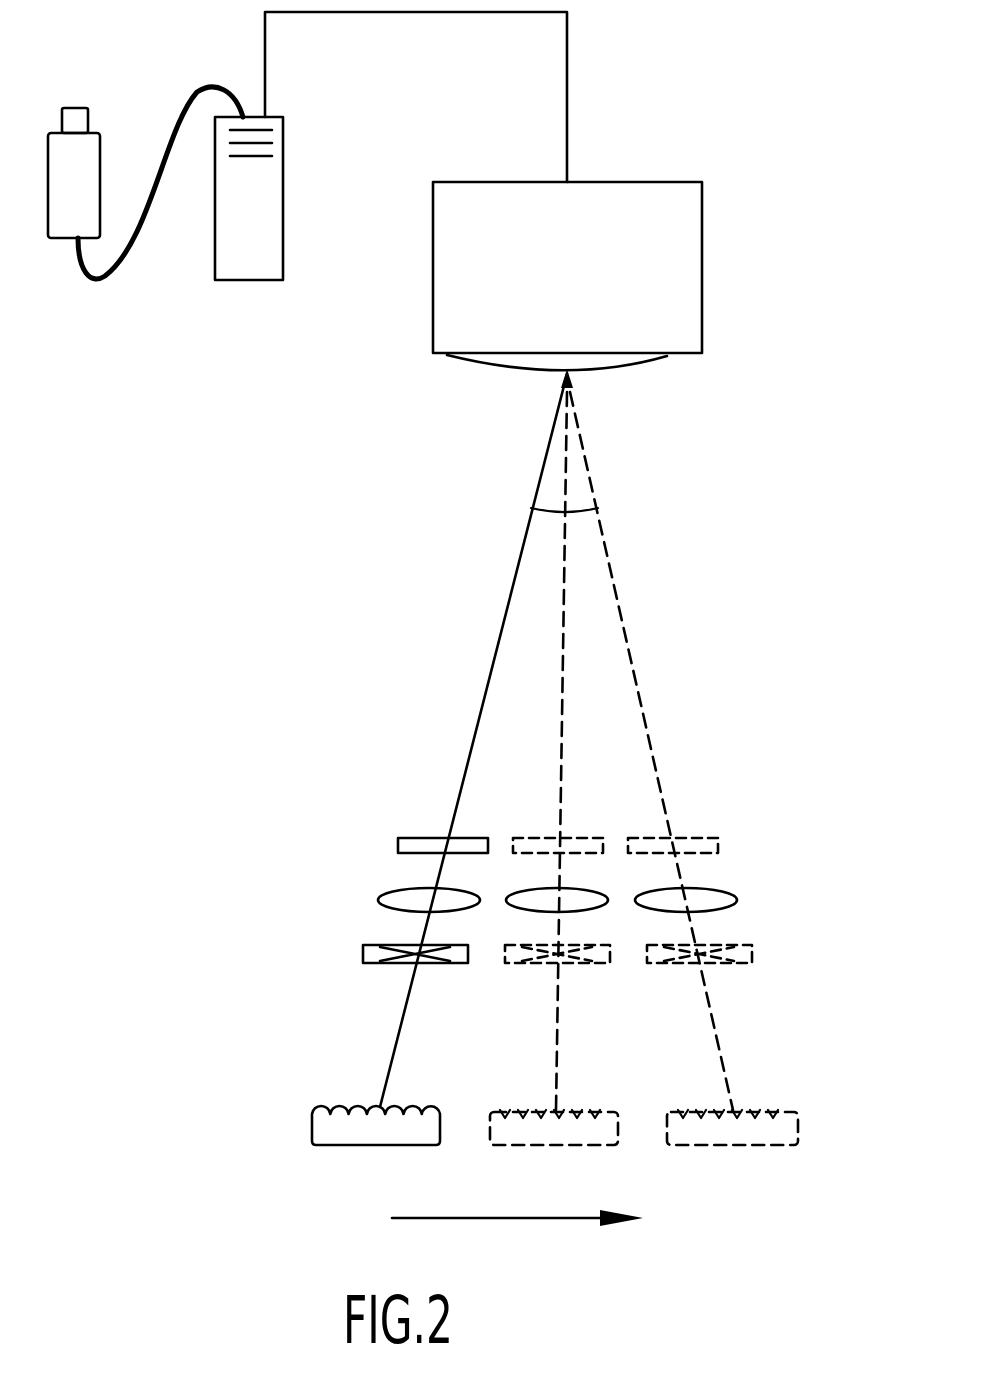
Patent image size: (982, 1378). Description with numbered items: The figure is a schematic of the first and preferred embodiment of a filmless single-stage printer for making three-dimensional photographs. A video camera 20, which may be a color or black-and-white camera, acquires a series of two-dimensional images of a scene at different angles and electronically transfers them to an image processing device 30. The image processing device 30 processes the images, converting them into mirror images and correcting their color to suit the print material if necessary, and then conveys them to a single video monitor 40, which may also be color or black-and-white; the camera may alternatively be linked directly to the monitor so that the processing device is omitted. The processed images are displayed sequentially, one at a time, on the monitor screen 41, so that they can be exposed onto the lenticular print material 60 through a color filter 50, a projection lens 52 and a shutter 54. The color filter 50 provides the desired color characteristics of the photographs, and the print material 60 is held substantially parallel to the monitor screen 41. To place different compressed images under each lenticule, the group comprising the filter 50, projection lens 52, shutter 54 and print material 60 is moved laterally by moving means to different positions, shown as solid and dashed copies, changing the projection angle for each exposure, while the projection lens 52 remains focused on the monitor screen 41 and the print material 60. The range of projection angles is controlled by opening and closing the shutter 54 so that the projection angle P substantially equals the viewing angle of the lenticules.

The video camera 20 is at (87, 152).
The image processing device 30 is at (273, 250).
The video monitor 40 is at (680, 192).
The monitor screen 41 is at (600, 368).
The projection angle P is at (564, 539).
The color filter 50 is at (410, 838).
The projection lens 52 is at (388, 898).
The shutter 54 is at (367, 958).
The lenticular print material 60 is at (312, 1112).